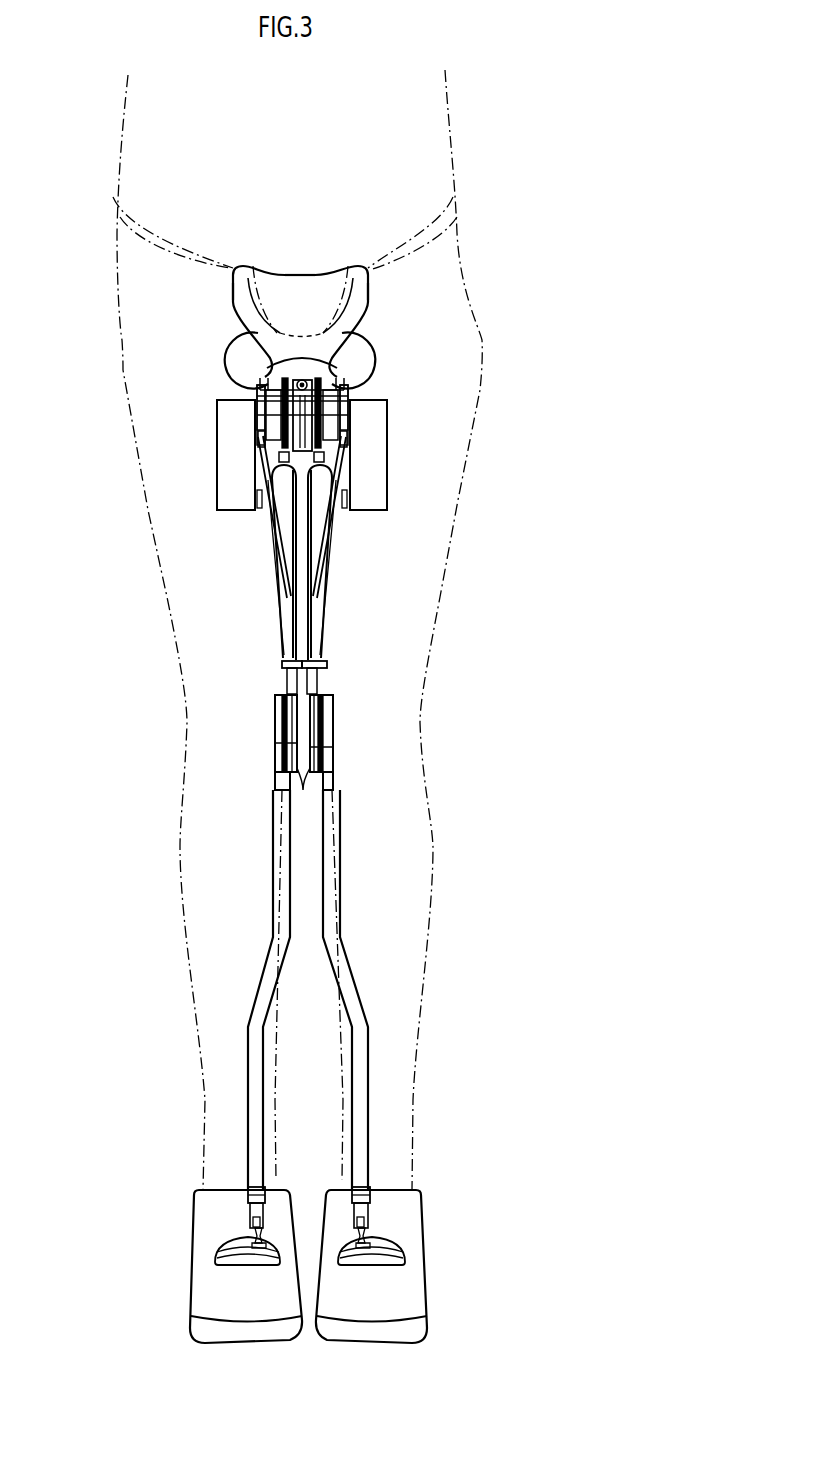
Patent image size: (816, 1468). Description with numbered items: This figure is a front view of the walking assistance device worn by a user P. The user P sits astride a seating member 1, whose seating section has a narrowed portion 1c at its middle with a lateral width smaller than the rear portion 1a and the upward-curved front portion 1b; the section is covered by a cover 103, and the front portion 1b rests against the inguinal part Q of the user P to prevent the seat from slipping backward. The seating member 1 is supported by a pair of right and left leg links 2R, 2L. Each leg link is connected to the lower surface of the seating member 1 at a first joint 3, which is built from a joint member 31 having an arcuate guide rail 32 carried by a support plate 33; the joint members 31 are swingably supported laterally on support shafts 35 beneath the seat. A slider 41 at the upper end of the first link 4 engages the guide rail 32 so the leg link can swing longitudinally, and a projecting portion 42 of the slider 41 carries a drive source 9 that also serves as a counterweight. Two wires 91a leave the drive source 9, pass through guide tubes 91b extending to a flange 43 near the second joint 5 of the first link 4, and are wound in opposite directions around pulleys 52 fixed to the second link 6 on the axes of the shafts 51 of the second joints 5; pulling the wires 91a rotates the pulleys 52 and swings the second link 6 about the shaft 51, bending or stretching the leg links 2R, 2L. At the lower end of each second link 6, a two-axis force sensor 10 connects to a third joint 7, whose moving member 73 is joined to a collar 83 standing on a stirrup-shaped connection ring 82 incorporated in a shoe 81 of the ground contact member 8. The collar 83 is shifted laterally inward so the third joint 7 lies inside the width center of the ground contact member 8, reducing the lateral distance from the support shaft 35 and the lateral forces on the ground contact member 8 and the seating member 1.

The seating member 1 is at (331, 242).
The rear portion 1a is at (357, 316).
The front portion 1b is at (233, 283).
The narrowed portion 1c is at (338, 364).
The cover 103 is at (290, 272).
The support shaft 35 is at (304, 378).
The first joint 3 is at (277, 403).
The joint member 31 is at (105, 430).
The guide rail 32 is at (262, 430).
The support plate 33 is at (263, 447).
The slider 41 is at (273, 445).
The drive source 9 is at (217, 483).
The projecting portion 42 is at (260, 522).
The guide tube 91b is at (275, 563).
The first link 4 is at (287, 588).
The flange 43 is at (282, 664).
The wire 91a is at (287, 683).
The second joint 5 is at (266, 717).
The right leg link 2R is at (219, 748).
The left leg link 2L is at (388, 743).
The shaft 51 is at (275, 743).
The pulley 52 is at (303, 791).
The second link 6 is at (267, 958).
The two-axis force sensor 10 is at (258, 1183).
The moving member 73 is at (253, 1217).
The third joint 7 is at (237, 1220).
The ground contact member 8 is at (189, 1232).
The connection ring 82 is at (220, 1252).
The collar 83 is at (260, 1255).
The shoe 81 is at (197, 1292).
The user P is at (463, 214).
The inguinal part Q is at (115, 200).